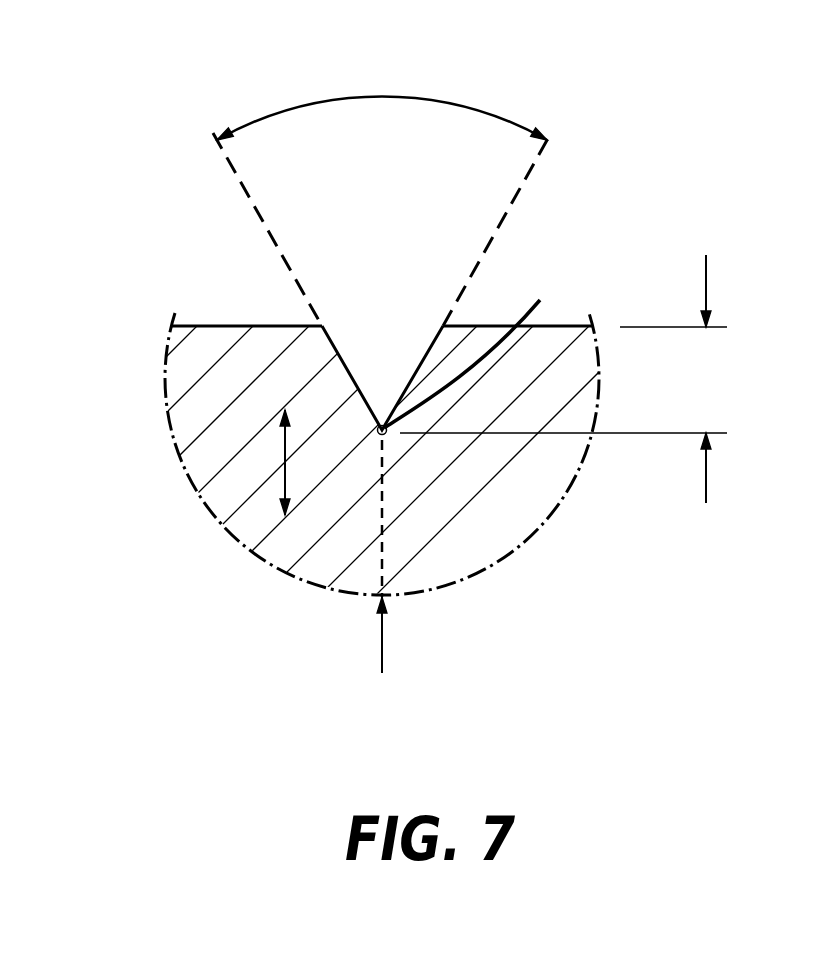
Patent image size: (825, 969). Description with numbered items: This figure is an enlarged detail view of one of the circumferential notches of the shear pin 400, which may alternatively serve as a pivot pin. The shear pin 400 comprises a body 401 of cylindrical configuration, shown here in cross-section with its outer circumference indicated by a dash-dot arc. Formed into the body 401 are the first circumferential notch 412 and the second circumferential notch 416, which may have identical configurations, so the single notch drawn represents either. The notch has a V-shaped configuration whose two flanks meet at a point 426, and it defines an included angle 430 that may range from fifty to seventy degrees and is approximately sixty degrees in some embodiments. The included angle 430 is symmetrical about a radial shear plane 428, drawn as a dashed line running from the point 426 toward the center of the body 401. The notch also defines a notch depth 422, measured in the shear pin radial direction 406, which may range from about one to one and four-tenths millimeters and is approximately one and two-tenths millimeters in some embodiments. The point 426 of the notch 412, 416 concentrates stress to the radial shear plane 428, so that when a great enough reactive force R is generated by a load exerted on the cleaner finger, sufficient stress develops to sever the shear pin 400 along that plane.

The shear pin 400 is at (523, 575).
The body 401 is at (455, 585).
The first circumferential notch 412 is at (363, 358).
The second circumferential notch 416 is at (382, 416).
The included angle 430 is at (398, 97).
The point 426 is at (479, 353).
The notch depth 422 is at (706, 478).
The radial shear plane 428 is at (380, 552).
The shear pin radial direction 406 is at (282, 457).
The reactive force R is at (383, 630).